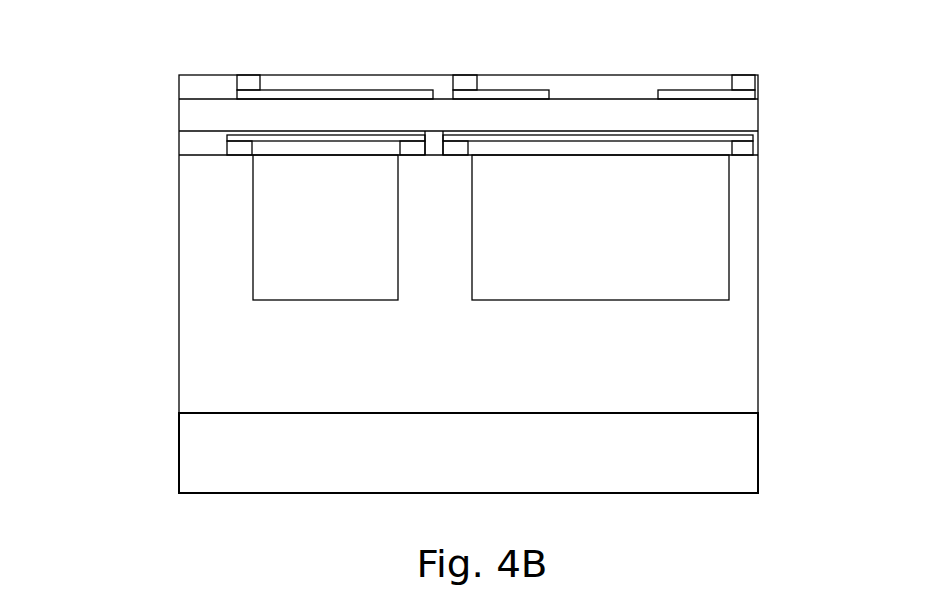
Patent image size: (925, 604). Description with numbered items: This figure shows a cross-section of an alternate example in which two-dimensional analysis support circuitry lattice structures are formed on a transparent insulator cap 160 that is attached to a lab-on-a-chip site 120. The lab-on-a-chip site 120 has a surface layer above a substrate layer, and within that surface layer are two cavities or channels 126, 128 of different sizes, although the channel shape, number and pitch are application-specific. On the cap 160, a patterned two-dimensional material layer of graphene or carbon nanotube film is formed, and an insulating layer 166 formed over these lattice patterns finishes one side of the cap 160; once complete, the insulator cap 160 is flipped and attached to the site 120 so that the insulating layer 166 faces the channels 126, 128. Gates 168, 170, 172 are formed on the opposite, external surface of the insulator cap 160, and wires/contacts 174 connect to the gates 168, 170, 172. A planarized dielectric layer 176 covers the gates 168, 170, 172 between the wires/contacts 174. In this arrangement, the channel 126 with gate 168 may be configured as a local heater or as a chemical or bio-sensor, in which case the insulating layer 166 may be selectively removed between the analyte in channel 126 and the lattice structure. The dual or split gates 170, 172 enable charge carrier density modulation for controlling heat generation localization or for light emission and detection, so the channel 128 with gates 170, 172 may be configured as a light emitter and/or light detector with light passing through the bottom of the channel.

The lab-on-a-chip site 120 is at (778, 467).
The channel 126 is at (297, 219).
The channel 128 is at (578, 221).
The transparent insulator cap 160 is at (125, 112).
The insulating layer 166 is at (125, 144).
The gate 168 is at (327, 90).
The gate 170 is at (500, 90).
The gate 172 is at (697, 90).
The wires/contacts 174 is at (247, 74).
The planarized dielectric layer 176 is at (125, 88).